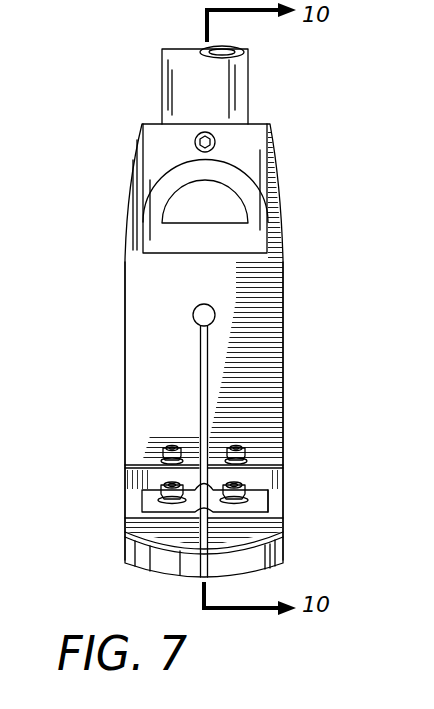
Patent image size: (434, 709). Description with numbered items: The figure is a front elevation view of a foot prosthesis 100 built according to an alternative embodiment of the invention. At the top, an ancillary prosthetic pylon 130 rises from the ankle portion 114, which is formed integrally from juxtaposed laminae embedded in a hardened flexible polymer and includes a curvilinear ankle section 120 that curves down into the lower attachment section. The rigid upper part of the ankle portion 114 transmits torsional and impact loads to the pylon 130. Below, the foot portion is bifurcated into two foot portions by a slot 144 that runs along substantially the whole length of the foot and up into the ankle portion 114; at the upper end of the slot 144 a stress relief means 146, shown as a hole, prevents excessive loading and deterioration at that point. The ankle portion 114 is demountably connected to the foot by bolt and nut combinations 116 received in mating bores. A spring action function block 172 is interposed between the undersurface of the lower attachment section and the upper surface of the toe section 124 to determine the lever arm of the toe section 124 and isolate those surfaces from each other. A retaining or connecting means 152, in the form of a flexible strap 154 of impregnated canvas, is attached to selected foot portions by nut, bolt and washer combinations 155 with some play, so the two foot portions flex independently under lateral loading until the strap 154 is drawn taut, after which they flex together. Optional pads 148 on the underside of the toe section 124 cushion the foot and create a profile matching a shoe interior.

The foot prosthesis 100 is at (100, 330).
The ankle portion 114 is at (285, 170).
The bolt and nut combinations 116 is at (163, 452).
The curvilinear ankle section 120 is at (116, 411).
The toe section 124 is at (135, 520).
The ancillary prosthetic pylon 130 is at (250, 95).
The slot 144 is at (190, 353).
The stress relief means 146 is at (187, 303).
The pads 148 is at (136, 558).
The retaining or connecting means 152 is at (294, 493).
The strap 154 is at (142, 498).
The nut, bolt and washer combinations 155 is at (244, 486).
The spring action function block 172 is at (140, 470).